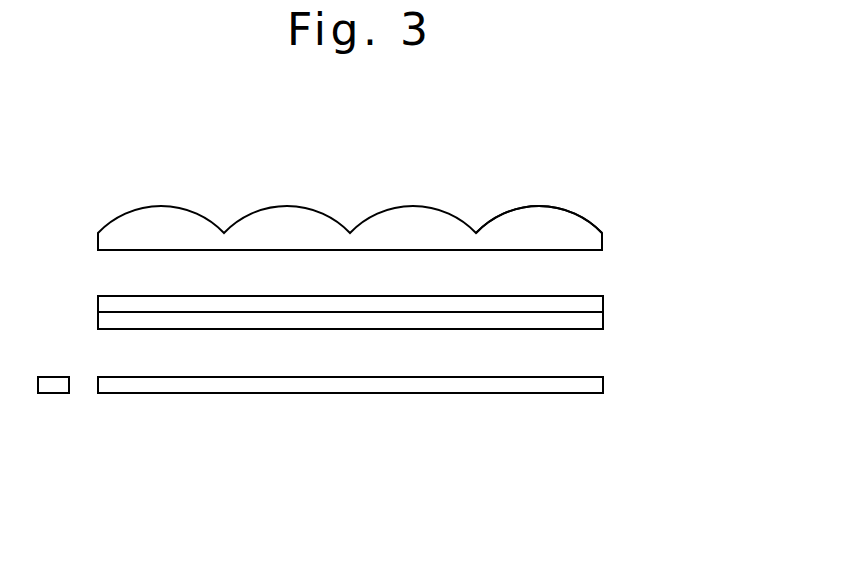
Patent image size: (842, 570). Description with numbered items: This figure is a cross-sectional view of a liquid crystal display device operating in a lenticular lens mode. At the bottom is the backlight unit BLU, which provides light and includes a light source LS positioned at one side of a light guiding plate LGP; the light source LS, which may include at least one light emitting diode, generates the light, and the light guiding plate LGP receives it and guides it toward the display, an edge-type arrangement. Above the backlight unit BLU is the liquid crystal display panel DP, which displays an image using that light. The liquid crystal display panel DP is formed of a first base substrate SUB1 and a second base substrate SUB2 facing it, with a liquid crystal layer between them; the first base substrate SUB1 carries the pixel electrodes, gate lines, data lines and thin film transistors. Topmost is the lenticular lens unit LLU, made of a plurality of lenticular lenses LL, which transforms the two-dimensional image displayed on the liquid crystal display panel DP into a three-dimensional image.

The lenticular lens LL is at (540, 216).
The lenticular lens unit LLU is at (592, 244).
The second base substrate SUB2 is at (592, 303).
The first base substrate SUB1 is at (592, 322).
The liquid crystal display panel DP is at (692, 290).
The light source LS is at (53, 386).
The light guiding plate LGP is at (350, 419).
The backlight unit BLU is at (320, 439).